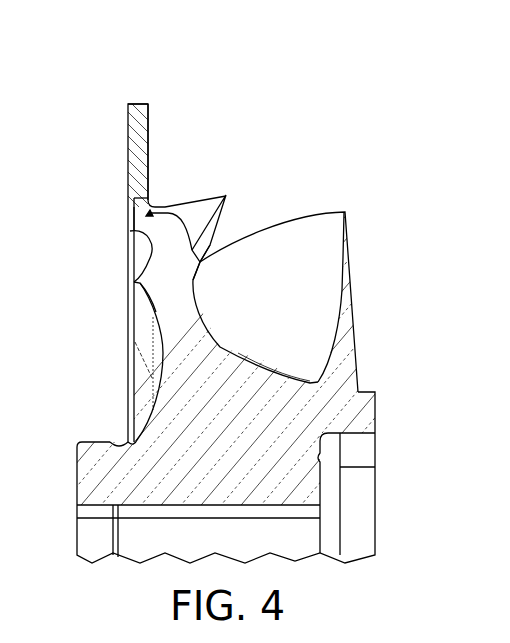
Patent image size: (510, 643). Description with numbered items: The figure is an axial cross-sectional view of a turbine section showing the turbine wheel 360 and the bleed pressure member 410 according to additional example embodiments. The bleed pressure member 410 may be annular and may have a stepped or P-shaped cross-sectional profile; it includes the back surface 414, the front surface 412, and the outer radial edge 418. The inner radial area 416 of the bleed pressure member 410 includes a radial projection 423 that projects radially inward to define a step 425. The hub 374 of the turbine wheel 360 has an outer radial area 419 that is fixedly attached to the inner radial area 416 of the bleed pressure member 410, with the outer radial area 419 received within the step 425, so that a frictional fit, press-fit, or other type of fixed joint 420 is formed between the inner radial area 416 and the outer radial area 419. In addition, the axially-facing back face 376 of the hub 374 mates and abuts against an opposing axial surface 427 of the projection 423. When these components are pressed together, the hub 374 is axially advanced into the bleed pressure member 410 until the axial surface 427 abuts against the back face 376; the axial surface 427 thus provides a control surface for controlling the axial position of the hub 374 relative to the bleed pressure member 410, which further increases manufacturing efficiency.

The bleed pressure member 410 is at (149, 104).
The outer radial edge 418 is at (138, 104).
The back surface 414 is at (127, 136).
The front surface 412 is at (148, 127).
The fixed joint 420 is at (152, 199).
The outer radial area 419 is at (138, 198).
The inner radial area 416 is at (178, 205).
The back face 376 is at (136, 204).
The radial projection 423 is at (130, 232).
The axial surface 427 is at (142, 265).
The step 425 is at (204, 262).
The turbine wheel 360 is at (324, 193).
The hub 374 is at (240, 452).